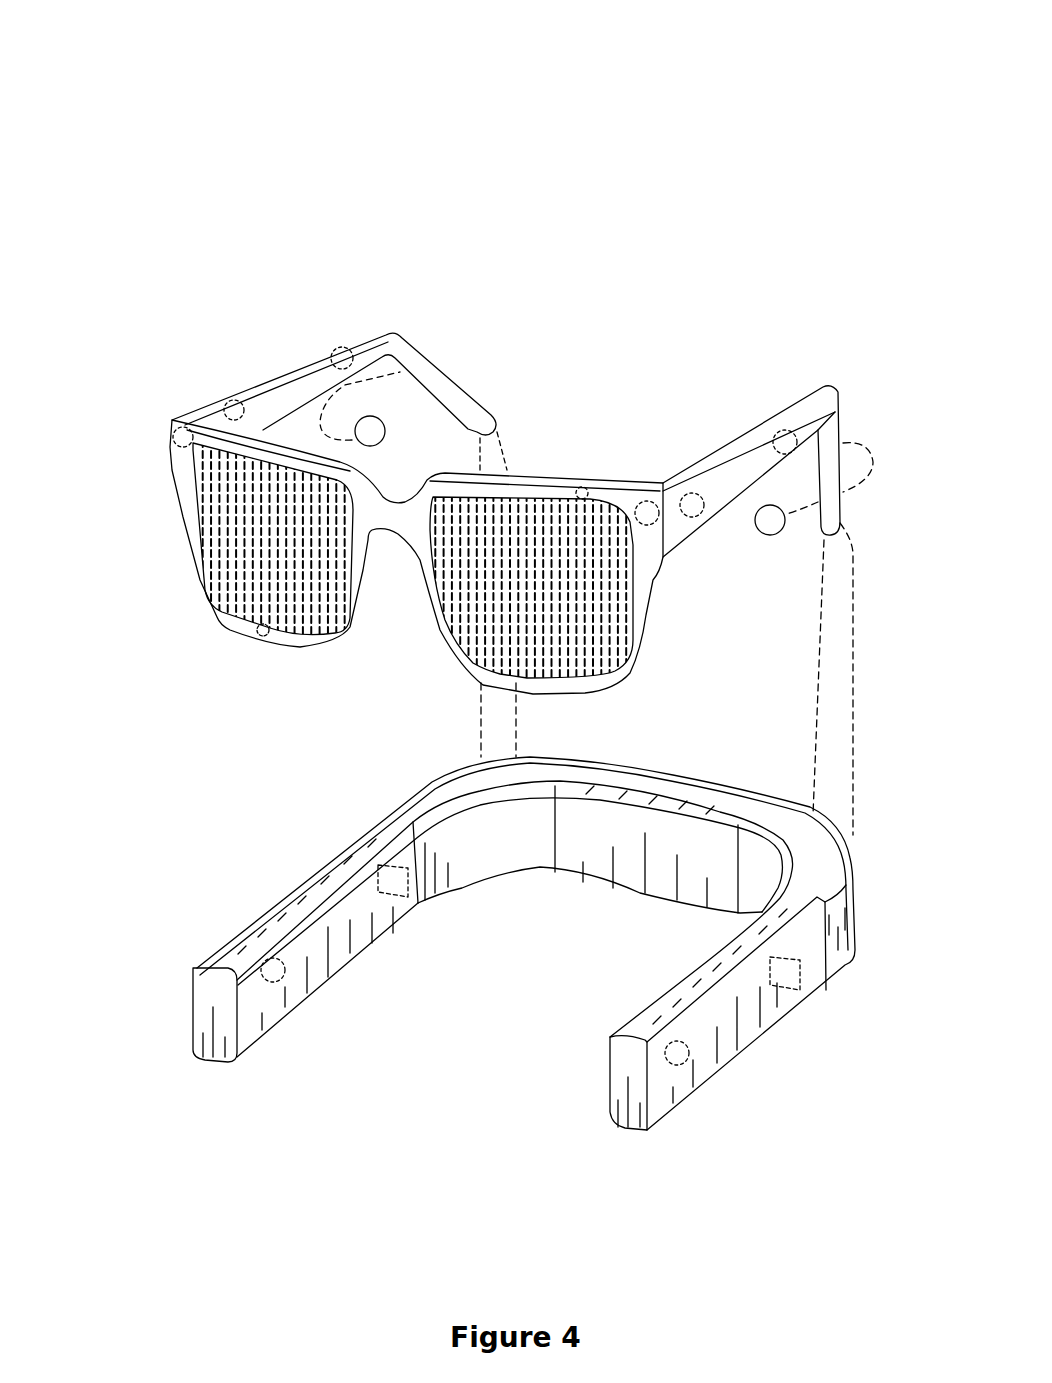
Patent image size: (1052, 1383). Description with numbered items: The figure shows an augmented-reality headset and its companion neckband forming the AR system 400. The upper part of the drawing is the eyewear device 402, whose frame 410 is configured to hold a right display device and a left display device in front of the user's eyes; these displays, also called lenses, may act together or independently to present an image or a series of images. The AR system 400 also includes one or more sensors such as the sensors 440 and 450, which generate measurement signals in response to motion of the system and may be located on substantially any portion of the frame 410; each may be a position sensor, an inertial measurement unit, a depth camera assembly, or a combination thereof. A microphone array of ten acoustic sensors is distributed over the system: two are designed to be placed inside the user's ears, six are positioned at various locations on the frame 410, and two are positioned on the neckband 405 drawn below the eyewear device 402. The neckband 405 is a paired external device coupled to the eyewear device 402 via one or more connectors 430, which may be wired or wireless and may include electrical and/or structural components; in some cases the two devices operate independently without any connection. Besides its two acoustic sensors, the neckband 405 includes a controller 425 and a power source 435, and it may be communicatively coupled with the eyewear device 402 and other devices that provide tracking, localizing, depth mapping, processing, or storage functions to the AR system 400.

The AR system 400 is at (238, 36).
The eyewear device 402 is at (386, 333).
The neckband 405 is at (193, 1062).
The frame 410 is at (388, 345).
The controller 425 is at (778, 976).
The connector 430 is at (853, 705).
The power source 435 is at (395, 884).
The sensor 440 is at (263, 636).
The sensor 450 is at (560, 487).